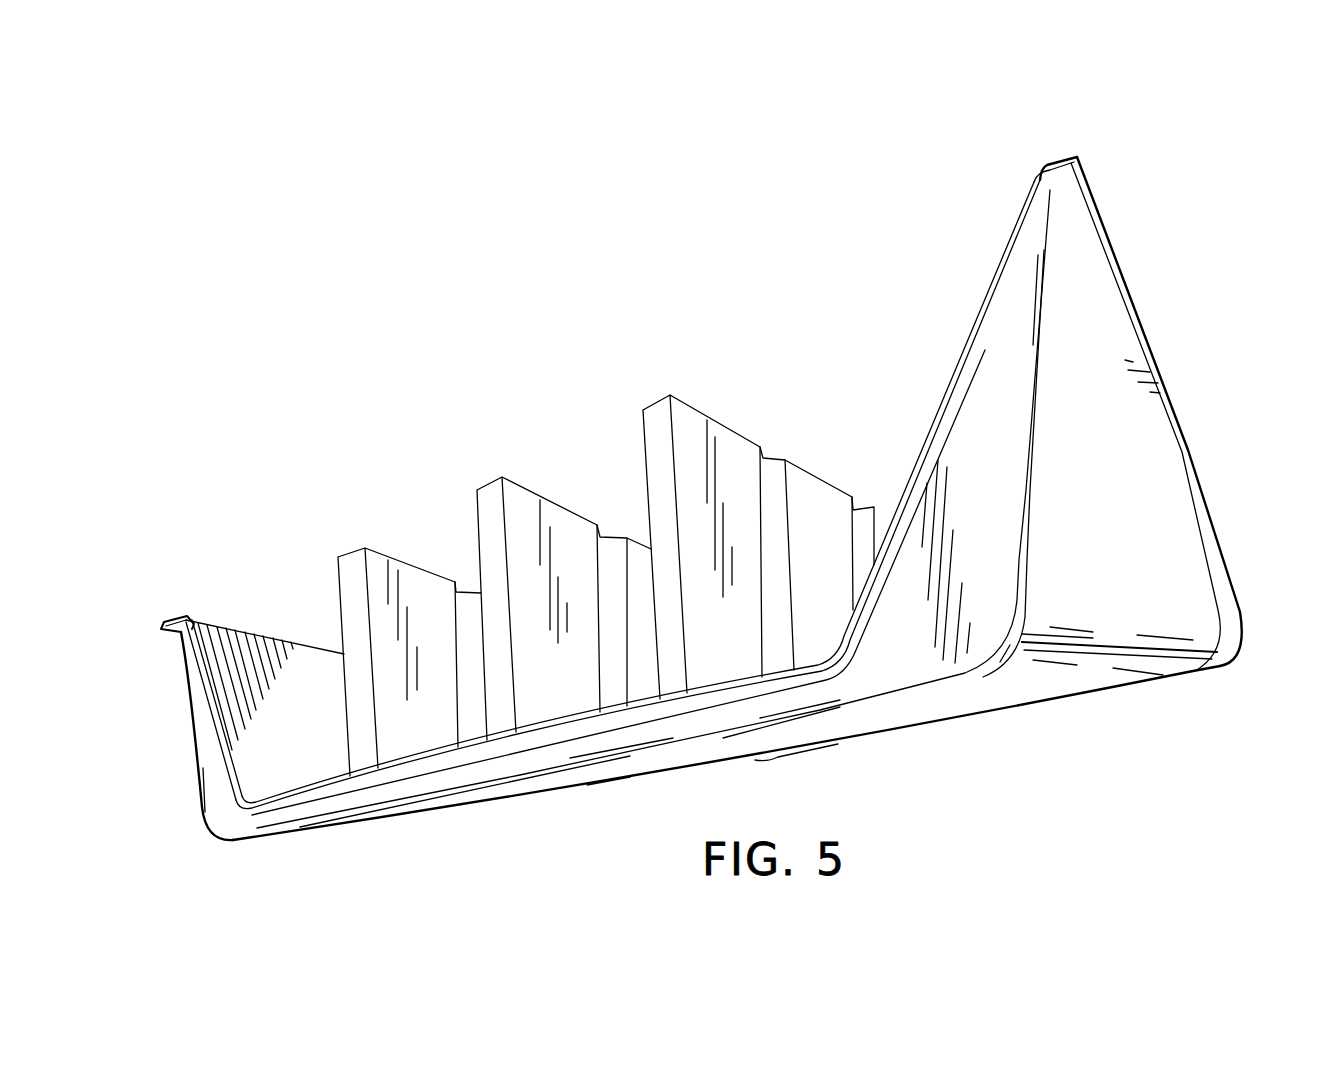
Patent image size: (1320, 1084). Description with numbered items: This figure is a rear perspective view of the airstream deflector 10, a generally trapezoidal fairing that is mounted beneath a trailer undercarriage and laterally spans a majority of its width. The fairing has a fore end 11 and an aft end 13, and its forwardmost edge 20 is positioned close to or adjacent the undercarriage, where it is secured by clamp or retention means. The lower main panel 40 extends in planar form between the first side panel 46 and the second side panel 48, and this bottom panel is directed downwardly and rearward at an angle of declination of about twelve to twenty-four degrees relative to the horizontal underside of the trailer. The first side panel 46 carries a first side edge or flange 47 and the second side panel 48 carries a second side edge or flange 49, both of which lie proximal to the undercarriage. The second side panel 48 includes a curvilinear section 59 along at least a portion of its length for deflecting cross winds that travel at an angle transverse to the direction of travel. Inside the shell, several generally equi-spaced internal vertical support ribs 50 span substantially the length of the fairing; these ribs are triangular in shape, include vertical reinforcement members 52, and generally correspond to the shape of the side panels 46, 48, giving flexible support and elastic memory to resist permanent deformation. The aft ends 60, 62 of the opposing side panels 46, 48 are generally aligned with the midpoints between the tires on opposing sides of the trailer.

The airstream deflector 10 is at (1178, 182).
The fore end 11 is at (1106, 708).
The aft end 13 is at (194, 788).
The forwardmost edge 20 is at (1033, 713).
The main panel 40 is at (892, 724).
The first side panel 46 is at (285, 673).
The first side edge or flange 47 is at (177, 636).
The second side panel 48 is at (1152, 512).
The second side edge or flange 49 is at (1127, 330).
The internal vertical support ribs 50 is at (347, 552).
The vertical reinforcement members 52 is at (467, 600).
The curvilinear section 59 is at (1143, 653).
The aft end of first side panel 60 is at (180, 622).
The aft end of second side panel 62 is at (1057, 178).